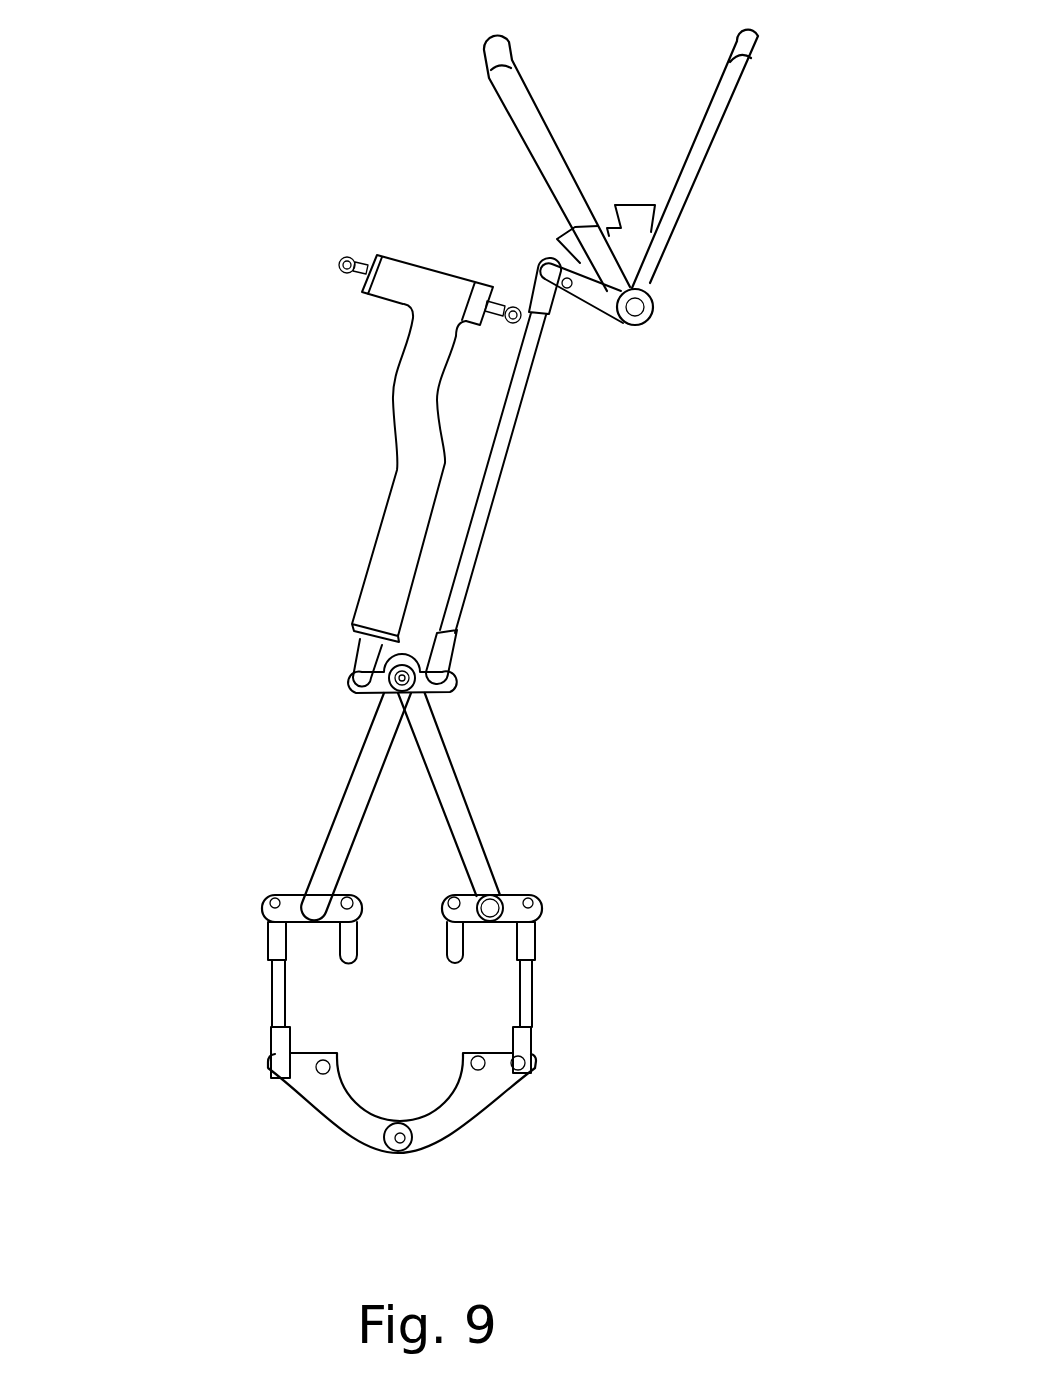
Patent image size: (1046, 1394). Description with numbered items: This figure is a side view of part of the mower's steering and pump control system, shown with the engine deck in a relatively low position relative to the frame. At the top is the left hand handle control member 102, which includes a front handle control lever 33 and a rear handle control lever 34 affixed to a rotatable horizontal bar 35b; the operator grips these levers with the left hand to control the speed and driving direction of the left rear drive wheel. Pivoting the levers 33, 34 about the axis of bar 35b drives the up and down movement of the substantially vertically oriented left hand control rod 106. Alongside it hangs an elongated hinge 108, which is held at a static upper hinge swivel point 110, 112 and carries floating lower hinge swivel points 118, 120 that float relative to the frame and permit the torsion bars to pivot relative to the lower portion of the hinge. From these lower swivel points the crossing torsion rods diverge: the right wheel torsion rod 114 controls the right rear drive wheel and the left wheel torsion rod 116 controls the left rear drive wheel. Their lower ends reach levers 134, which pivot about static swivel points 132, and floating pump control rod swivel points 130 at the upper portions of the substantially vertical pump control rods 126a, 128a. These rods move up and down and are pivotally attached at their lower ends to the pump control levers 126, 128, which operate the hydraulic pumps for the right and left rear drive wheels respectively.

The front handle control lever 33 is at (508, 92).
The rear handle control lever 34 is at (730, 92).
The rotatable horizontal bar 35b is at (636, 307).
The left hand handle control member 102 is at (736, 215).
The left hand control rod 106 is at (512, 452).
The elongated hinge 108 is at (417, 490).
The static upper hinge swivel point 110 is at (516, 290).
The static upper hinge swivel point 112 is at (361, 248).
The right wheel torsion rod 114 is at (438, 777).
The left wheel torsion rod 116 is at (360, 793).
The floating lower hinge swivel point 118 is at (340, 694).
The floating lower hinge swivel point 120 is at (460, 696).
The pump control lever 126 is at (473, 1098).
The pump control rod 126a is at (523, 995).
The pump control lever 128 is at (348, 1117).
The pump control rod 128a is at (288, 1002).
The floating pump control rod swivel point 130 is at (274, 884).
The static swivel point 132 is at (450, 880).
The lever 134 is at (320, 937).